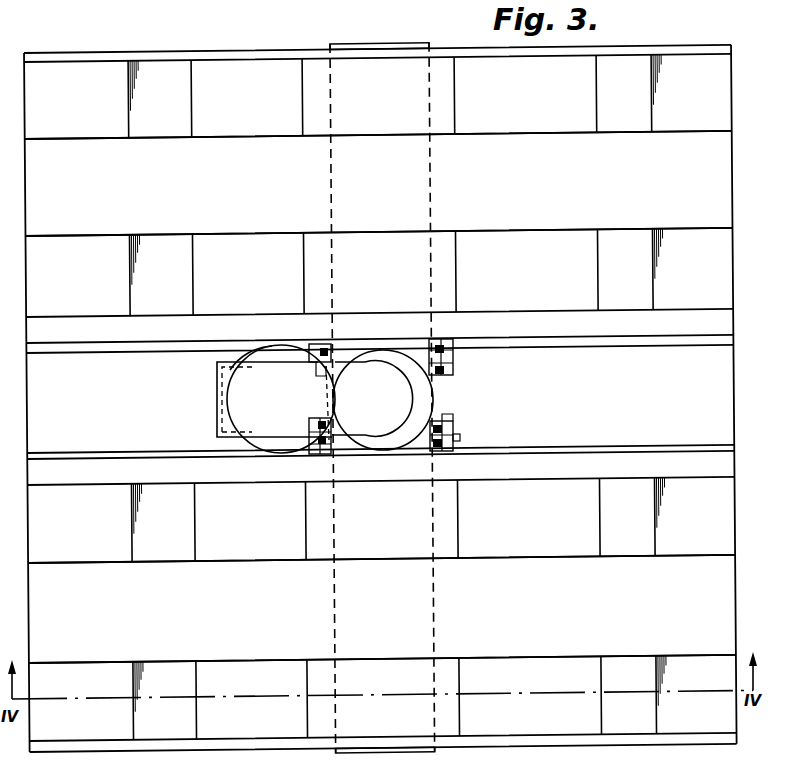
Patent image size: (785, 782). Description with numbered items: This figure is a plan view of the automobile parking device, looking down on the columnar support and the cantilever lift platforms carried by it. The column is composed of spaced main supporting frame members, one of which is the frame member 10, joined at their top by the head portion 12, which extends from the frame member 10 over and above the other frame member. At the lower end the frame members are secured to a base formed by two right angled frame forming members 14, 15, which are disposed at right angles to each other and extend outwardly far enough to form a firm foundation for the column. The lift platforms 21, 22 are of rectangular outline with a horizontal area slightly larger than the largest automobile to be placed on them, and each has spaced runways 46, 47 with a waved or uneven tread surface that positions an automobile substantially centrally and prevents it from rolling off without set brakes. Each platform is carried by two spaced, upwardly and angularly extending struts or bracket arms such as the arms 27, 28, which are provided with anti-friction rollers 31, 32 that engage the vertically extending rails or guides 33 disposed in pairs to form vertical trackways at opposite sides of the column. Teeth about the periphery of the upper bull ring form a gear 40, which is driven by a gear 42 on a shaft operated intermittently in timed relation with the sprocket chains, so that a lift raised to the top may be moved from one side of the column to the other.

The main supporting frame member 10 is at (216, 395).
The head portion 12 is at (276, 397).
The right angled frame forming member 14 is at (410, 756).
The right angled frame forming member 15 is at (626, 401).
The lift platform 21 is at (650, 623).
The lift platform 22 is at (640, 198).
The strut or bracket arm 27 is at (320, 455).
The strut or bracket arm 28 is at (318, 347).
The roller 31 is at (458, 441).
The roller 32 is at (449, 418).
The vertically extending rail or guide 33 is at (330, 350).
The gear 40 is at (376, 352).
The gear 42 is at (262, 357).
The runway 46 is at (719, 106).
The runway 47 is at (720, 279).